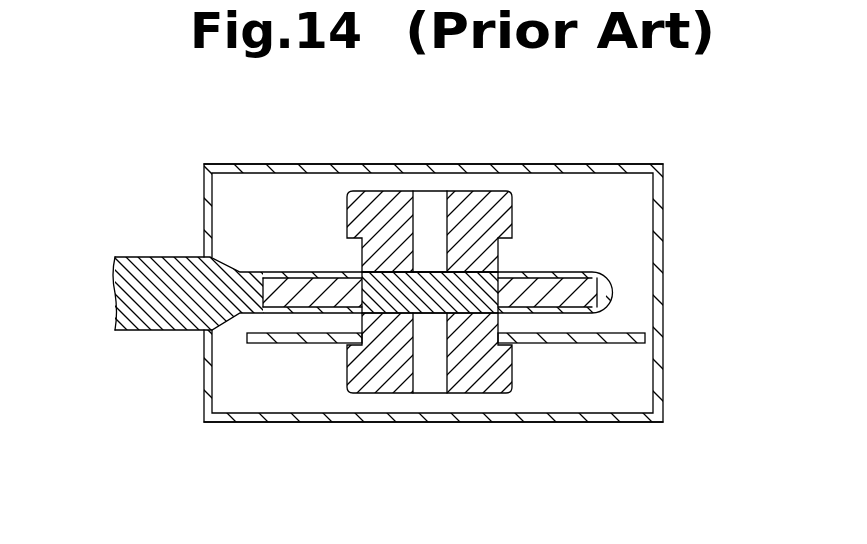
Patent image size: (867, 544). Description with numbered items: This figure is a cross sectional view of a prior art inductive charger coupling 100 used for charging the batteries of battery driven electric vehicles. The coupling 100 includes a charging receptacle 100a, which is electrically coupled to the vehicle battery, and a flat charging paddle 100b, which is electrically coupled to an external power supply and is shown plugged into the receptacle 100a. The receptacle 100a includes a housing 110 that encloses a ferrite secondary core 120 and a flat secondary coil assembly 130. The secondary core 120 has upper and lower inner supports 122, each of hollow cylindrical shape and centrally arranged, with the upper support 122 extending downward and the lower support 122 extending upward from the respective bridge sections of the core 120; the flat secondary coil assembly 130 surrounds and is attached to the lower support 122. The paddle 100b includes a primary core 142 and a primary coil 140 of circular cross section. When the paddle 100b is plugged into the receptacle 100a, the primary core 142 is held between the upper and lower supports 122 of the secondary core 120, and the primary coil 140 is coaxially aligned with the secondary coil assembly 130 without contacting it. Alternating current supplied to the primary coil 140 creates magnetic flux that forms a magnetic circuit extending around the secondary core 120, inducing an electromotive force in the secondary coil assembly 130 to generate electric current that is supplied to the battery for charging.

The inductive charger coupling 100 is at (572, 161).
The charging receptacle 100a is at (223, 165).
The flat charging paddle 100b is at (148, 254).
The housing 110 is at (295, 423).
The ferrite secondary core 120 is at (471, 190).
The inner support 122 is at (392, 330).
The flat secondary coil assembly 130 is at (290, 343).
The primary coil 140 is at (563, 290).
The primary core 142 is at (470, 297).